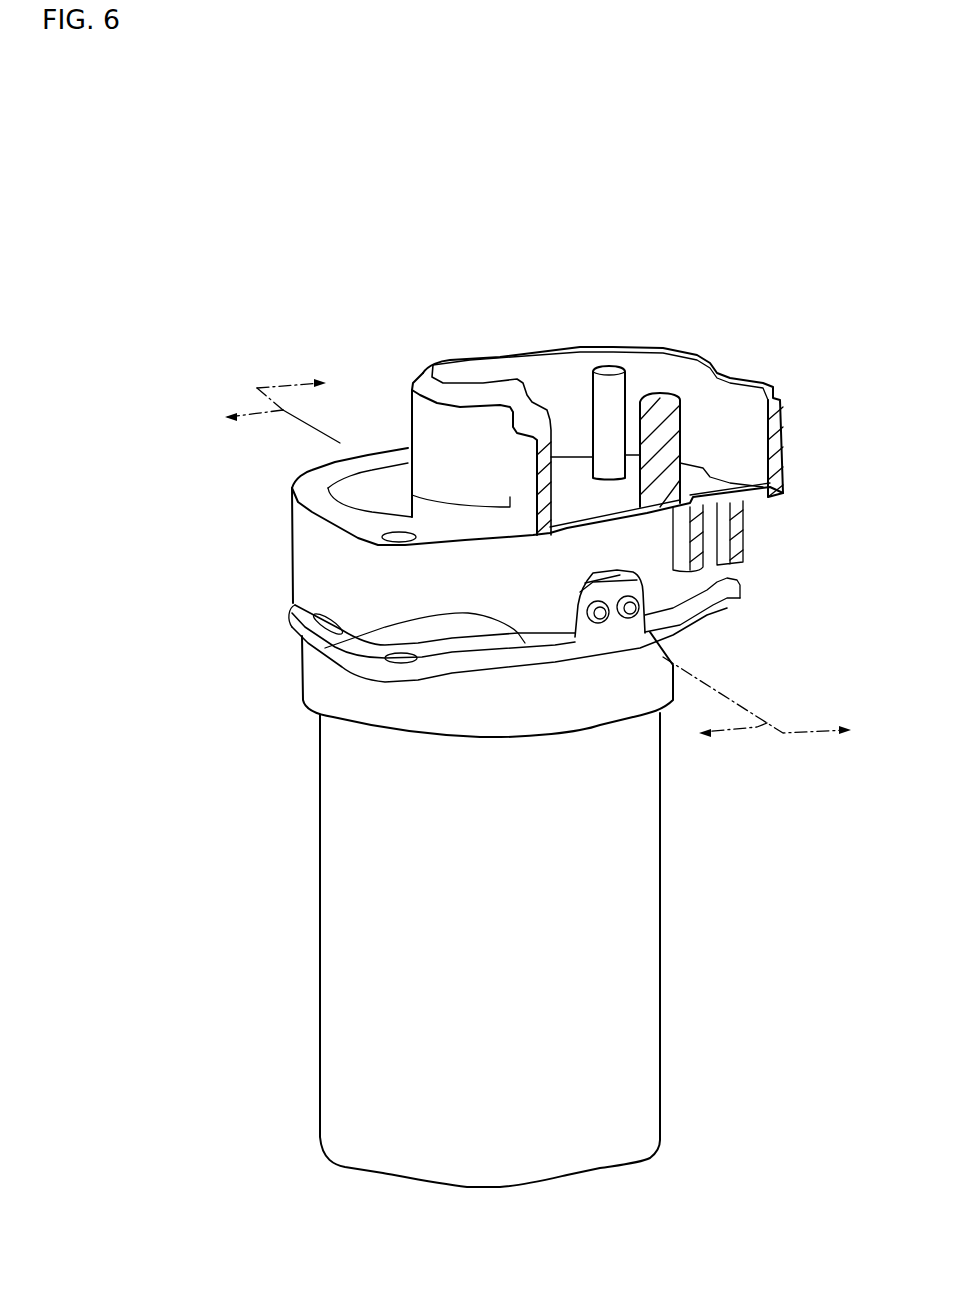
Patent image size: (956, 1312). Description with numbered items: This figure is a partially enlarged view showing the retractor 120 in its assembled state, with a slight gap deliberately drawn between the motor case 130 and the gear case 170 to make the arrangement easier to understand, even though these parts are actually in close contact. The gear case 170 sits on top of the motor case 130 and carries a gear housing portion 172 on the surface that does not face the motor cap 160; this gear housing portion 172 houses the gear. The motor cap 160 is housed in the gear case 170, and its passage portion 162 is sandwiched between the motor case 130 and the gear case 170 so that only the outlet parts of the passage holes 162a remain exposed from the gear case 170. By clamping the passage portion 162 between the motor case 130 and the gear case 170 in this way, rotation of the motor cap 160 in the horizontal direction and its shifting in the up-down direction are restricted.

The retractor 120 is at (410, 250).
The motor case 130 is at (655, 963).
The motor cap 160 is at (320, 650).
The passage portion 162 is at (620, 640).
The passage holes 162a is at (647, 610).
The gear case 170 is at (418, 412).
The gear housing portion 172 is at (568, 403).